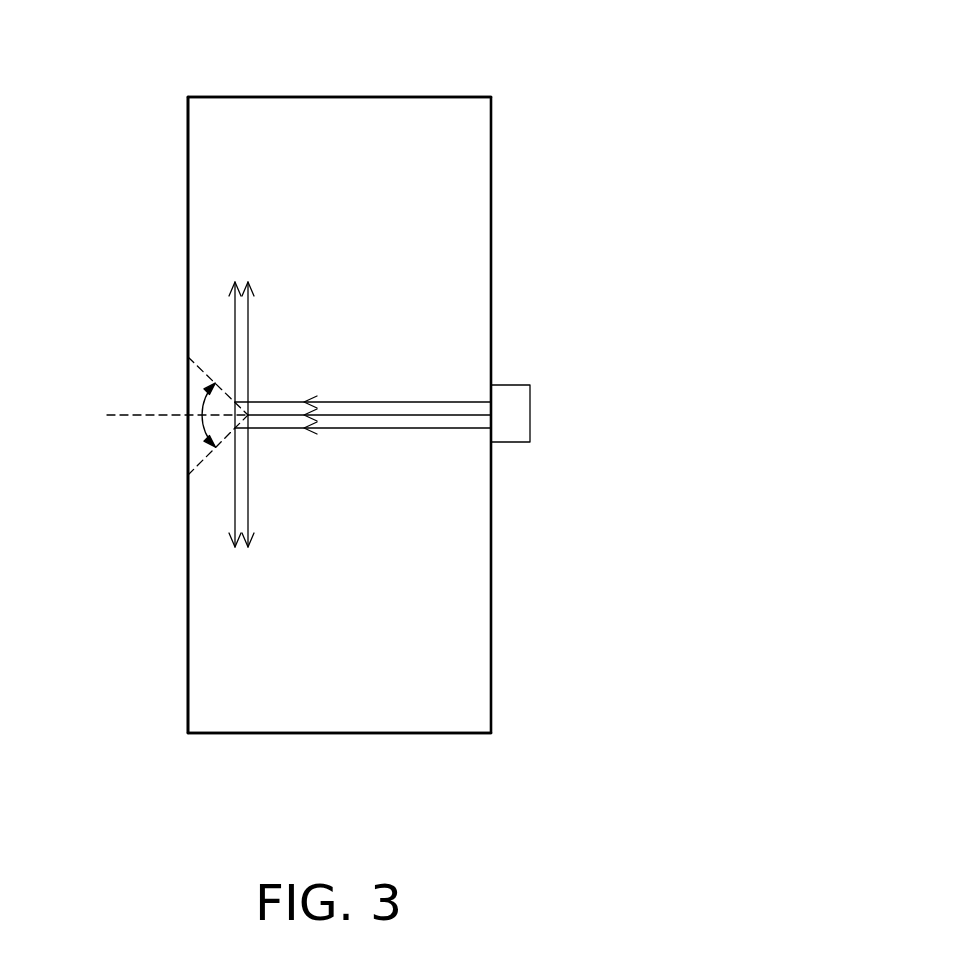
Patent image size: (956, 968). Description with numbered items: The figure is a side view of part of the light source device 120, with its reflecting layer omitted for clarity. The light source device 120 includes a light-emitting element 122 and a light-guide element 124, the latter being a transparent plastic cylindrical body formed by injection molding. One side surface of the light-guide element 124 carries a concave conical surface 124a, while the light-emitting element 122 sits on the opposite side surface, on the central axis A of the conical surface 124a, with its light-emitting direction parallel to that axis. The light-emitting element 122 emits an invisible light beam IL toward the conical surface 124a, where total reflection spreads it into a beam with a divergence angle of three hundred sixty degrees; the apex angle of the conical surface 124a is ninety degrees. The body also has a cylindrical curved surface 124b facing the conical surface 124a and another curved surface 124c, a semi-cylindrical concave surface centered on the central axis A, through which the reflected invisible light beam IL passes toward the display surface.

The light source device 120 is at (611, 77).
The light-emitting element 122 is at (513, 397).
The light-guide element 124 is at (474, 97).
The conical surface 124a is at (223, 366).
The cylindrical curved surface 124b is at (322, 115).
The curved surface 124c is at (330, 713).
The invisible light beam IL is at (415, 402).
The central axis A is at (118, 423).